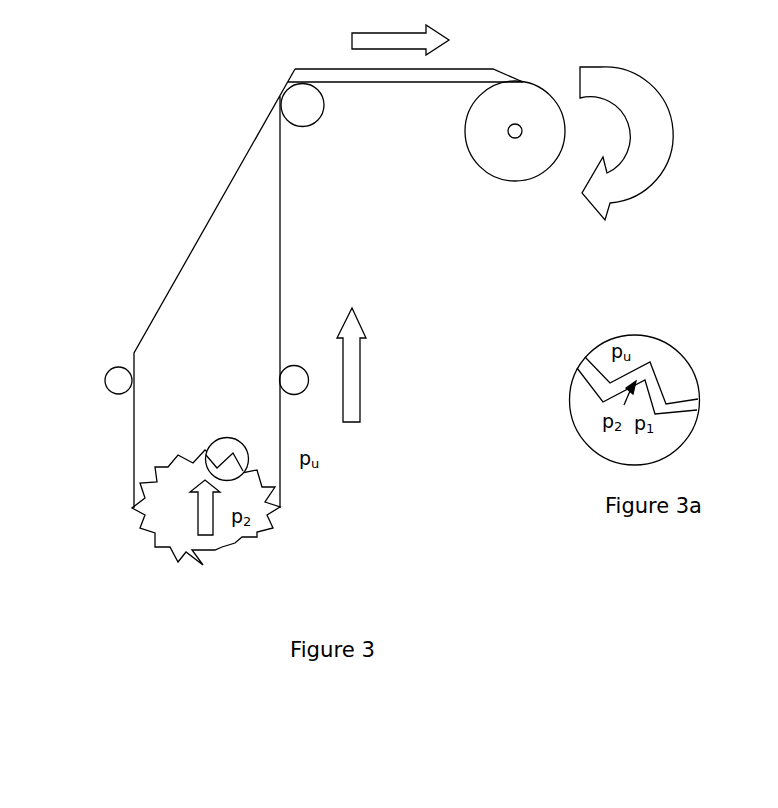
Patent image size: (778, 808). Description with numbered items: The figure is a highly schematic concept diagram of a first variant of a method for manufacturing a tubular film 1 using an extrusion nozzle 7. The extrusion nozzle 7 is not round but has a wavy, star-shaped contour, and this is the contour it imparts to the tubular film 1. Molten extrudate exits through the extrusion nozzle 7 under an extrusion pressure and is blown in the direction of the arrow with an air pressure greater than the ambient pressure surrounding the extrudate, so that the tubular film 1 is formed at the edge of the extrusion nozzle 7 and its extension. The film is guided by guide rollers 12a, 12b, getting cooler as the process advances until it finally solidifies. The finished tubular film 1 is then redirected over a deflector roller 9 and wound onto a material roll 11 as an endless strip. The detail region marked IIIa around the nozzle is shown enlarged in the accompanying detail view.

In FIG. 3, the tubular film 1 is at (280, 227).
In FIG. 3, the deflector roller 9 is at (307, 126).
In FIG. 3, the material roll 11 is at (475, 163).
In FIG. 3, the guide roller 12a is at (104, 386).
In FIG. 3, the guide roller 12b is at (292, 365).
In FIG. 3, the extrusion nozzle 7 is at (257, 533).
In FIG. 3A, the extrusion nozzle 7 is at (690, 417).
In FIG. 3, the detail area of Figure 3a IIIa is at (237, 437).